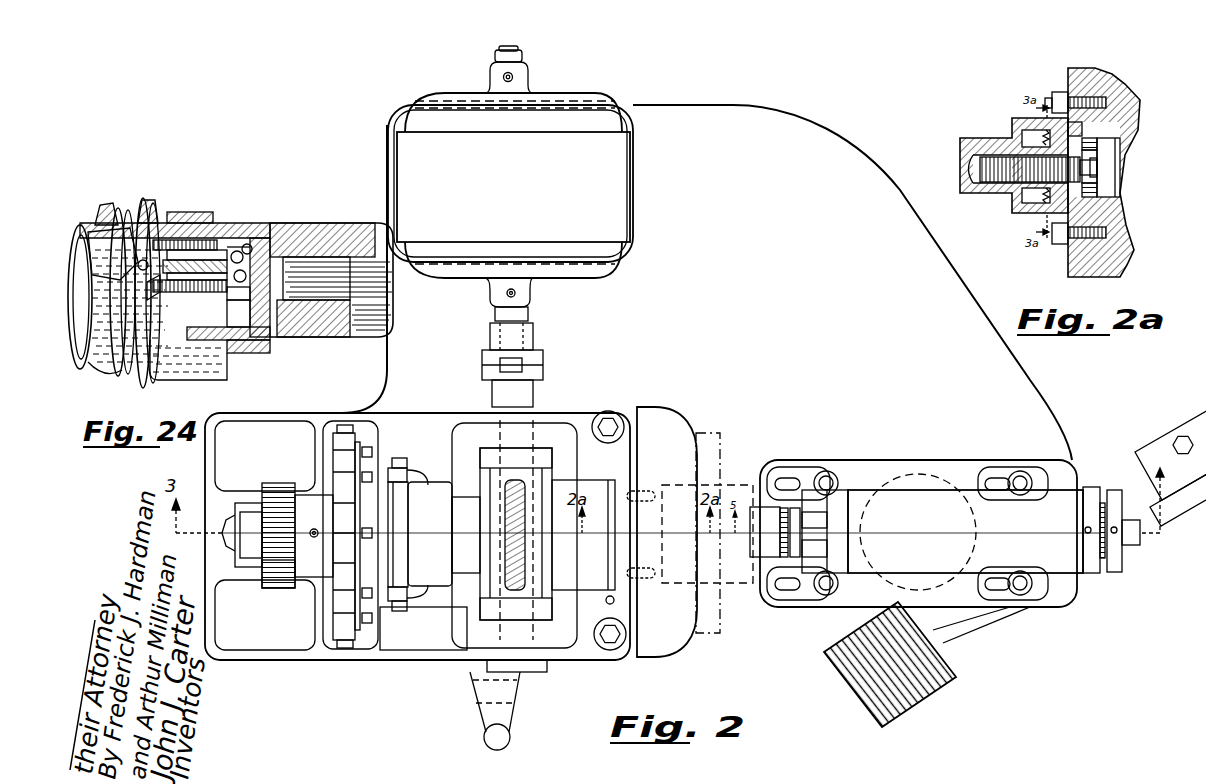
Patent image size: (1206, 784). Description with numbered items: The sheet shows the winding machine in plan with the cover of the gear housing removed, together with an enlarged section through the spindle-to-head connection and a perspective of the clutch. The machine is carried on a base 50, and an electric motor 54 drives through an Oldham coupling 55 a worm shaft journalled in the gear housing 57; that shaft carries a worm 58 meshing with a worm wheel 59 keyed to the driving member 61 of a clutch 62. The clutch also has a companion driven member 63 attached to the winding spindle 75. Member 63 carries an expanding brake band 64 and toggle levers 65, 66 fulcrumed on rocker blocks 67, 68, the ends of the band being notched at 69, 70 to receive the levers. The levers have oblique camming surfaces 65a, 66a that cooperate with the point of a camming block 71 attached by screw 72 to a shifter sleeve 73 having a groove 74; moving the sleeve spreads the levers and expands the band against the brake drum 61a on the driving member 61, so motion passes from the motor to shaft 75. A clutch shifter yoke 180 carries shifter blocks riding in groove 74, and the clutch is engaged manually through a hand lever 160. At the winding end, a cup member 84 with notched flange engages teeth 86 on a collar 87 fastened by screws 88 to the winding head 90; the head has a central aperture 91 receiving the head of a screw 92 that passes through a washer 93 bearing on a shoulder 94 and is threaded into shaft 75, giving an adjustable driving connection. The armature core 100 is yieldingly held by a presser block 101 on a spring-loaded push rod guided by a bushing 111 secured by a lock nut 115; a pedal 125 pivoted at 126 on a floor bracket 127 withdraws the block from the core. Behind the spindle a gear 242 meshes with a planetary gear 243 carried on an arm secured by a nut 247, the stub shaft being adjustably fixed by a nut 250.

In FIG. 2, the base 50 is at (758, 104).
In FIG. 2, the electric motor 54 is at (622, 175).
In FIG. 2, the Oldham coupling 55 is at (543, 372).
In FIG. 2, the gear housing 57 is at (318, 631).
In FIG. 2, the worm 58 is at (492, 519).
In FIG. 2, the worm wheel 59 is at (522, 553).
In FIG. 2, the shifter sleeve 73 is at (437, 486).
In FIG. 24, the shifter sleeve 73 is at (93, 372).
In FIG. 2, the groove 74 is at (404, 552).
In FIG. 24, the groove 74 is at (152, 390).
In FIG. 2, the clutch shifter yoke 180 is at (415, 592).
In FIG. 2, the hand lever 160 is at (505, 713).
In FIG. 2, the core 100 is at (734, 482).
In FIG. 2, the presser block 101 is at (767, 550).
In FIG. 2, the lock nut 115 is at (1088, 487).
In FIG. 2, the bushing 111 is at (1116, 490).
In FIG. 2, the pivot 126 is at (1192, 432).
In FIG. 2, the bracket 127 is at (1182, 514).
In FIG. 2, the pedal 125 is at (975, 618).
In FIG. 2, the gear 242 is at (262, 583).
In FIG. 2, the planetary gear 243 is at (282, 520).
In FIG. 2, the nut 247 is at (240, 512).
In FIG. 2, the nut 250 is at (224, 545).
In FIG. 24, the clutch 62 is at (175, 191).
In FIG. 24, the driven member 63 is at (100, 227).
In FIG. 24, the camming block 71 is at (98, 262).
In FIG. 24, the oblique camming surface 65a is at (165, 240).
In FIG. 24, the toggle lever 65 is at (195, 255).
In FIG. 24, the notch 69 is at (240, 250).
In FIG. 24, the rocker block 67 is at (252, 256).
In FIG. 24, the driving member 61 is at (302, 262).
In FIG. 24, the brake drum 61a is at (236, 342).
In FIG. 24, the expanding brake band 64 is at (250, 325).
In FIG. 24, the toggle lever 66 is at (197, 278).
In FIG. 24, the oblique camming surface 66a is at (157, 300).
In FIG. 24, the notch 70 is at (230, 290).
In FIG. 24, the rocker block 68 is at (237, 287).
In FIG. 24, the screw 72 is at (138, 280).
In FIG. 2a, the winding spindle 75 is at (973, 138).
In FIG. 2a, the cup member 84 is at (1022, 212).
In FIG. 2a, the teeth 86 is at (1047, 138).
In FIG. 2a, the collar 87 is at (1057, 92).
In FIG. 2a, the screws 88 is at (1049, 98).
In FIG. 2a, the winding head 90 is at (1077, 78).
In FIG. 2a, the central aperture 91 is at (1107, 148).
In FIG. 2a, the screw 92 is at (1075, 167).
In FIG. 2a, the washer 93 is at (1088, 185).
In FIG. 2a, the shoulder 94 is at (1082, 130).